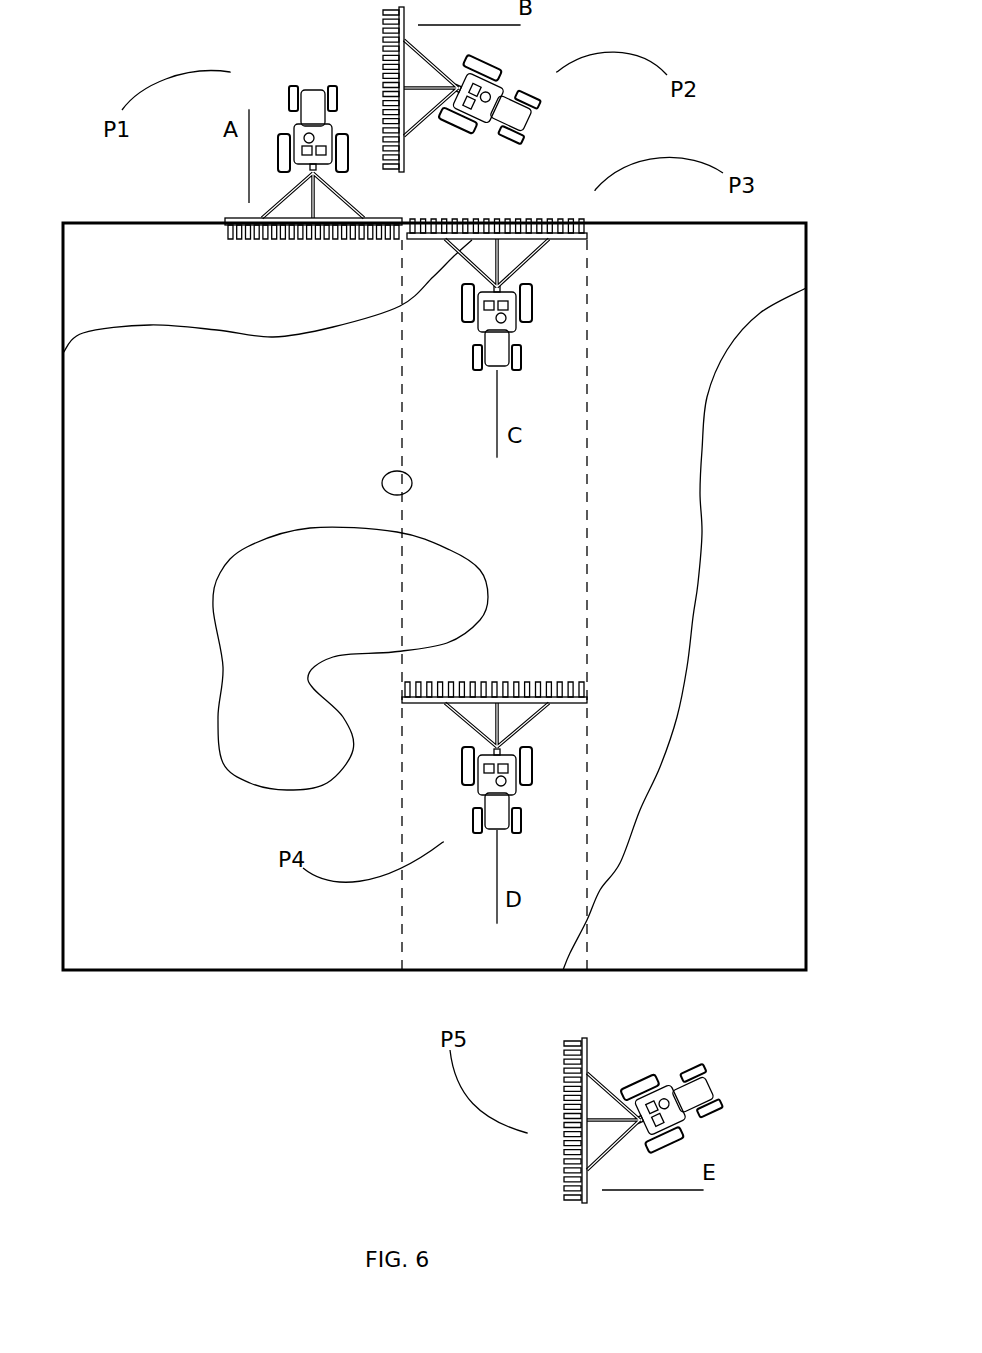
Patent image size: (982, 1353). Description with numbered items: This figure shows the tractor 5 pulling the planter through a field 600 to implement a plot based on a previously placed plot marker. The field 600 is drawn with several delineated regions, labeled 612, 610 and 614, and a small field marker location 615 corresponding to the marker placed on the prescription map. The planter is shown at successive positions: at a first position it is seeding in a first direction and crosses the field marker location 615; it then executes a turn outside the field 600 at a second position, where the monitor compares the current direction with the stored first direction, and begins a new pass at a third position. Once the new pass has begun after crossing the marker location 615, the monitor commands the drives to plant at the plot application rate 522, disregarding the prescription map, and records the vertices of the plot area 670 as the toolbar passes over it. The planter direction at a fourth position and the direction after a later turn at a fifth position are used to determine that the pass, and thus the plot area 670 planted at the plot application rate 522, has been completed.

The field 600 is at (753, 425).
The headland / untreated areas 612 is at (181, 281).
The treated field region 610 is at (663, 637).
The obstacle area 614 is at (298, 617).
The field marker location 615 is at (413, 478).
The plot application rate 522 is at (540, 657).
The plot area 670 is at (435, 935).
The tractor 5 is at (748, 1118).